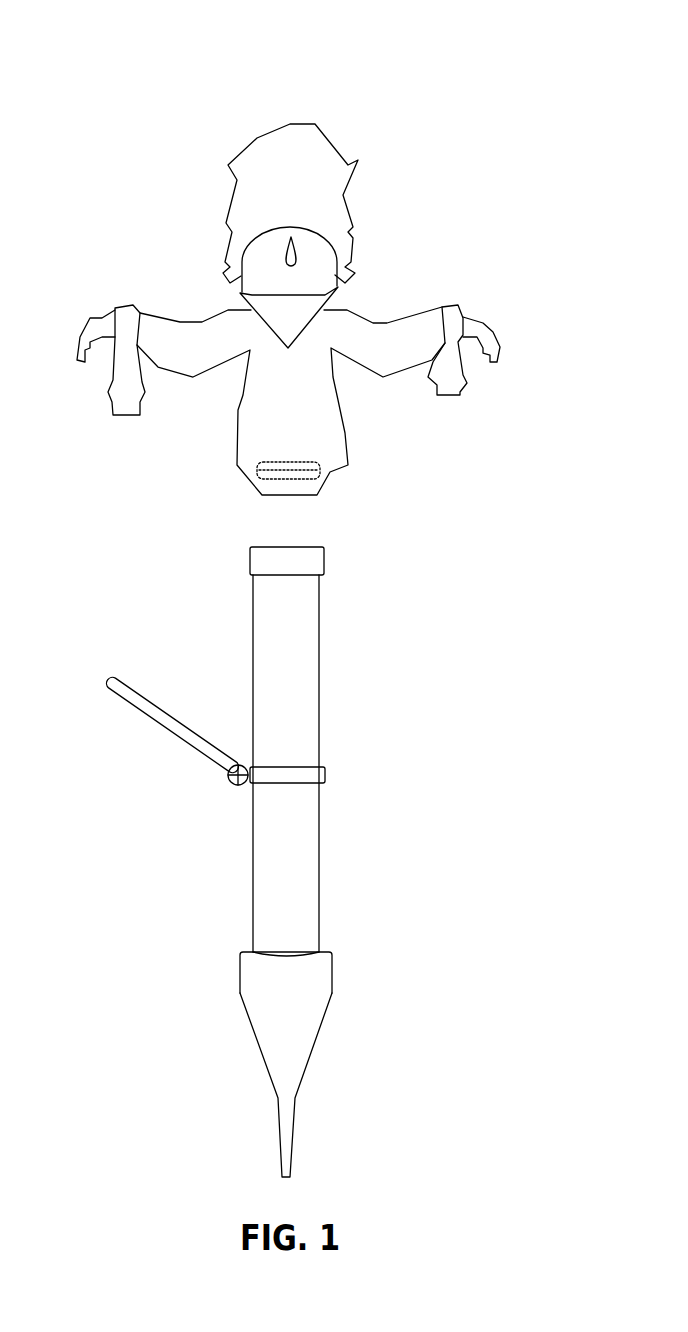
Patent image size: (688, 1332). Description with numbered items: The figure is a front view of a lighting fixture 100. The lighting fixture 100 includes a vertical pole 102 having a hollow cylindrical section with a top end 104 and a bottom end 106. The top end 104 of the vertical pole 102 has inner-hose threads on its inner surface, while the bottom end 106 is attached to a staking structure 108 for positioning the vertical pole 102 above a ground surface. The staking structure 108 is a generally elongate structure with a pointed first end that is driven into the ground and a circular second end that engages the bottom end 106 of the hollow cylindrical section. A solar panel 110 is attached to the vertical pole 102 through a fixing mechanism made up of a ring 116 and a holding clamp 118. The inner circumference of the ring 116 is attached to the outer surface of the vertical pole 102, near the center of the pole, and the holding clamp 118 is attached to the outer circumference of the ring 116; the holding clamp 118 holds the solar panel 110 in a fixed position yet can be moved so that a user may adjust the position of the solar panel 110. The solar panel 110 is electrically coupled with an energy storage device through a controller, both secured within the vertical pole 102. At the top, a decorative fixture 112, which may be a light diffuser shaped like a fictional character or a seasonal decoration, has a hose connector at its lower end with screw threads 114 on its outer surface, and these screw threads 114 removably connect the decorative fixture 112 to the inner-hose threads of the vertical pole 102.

The lighting fixture 100 is at (300, 60).
The vertical pole 102 is at (338, 765).
The top end 104 is at (321, 534).
The bottom end 106 is at (306, 940).
The staking structure 108 is at (321, 1085).
The solar panel 110 is at (137, 695).
The decorative fixture 112 is at (288, 309).
The screw threads 114 is at (330, 441).
The ring 116 is at (326, 745).
The holding clamp 118 is at (199, 812).